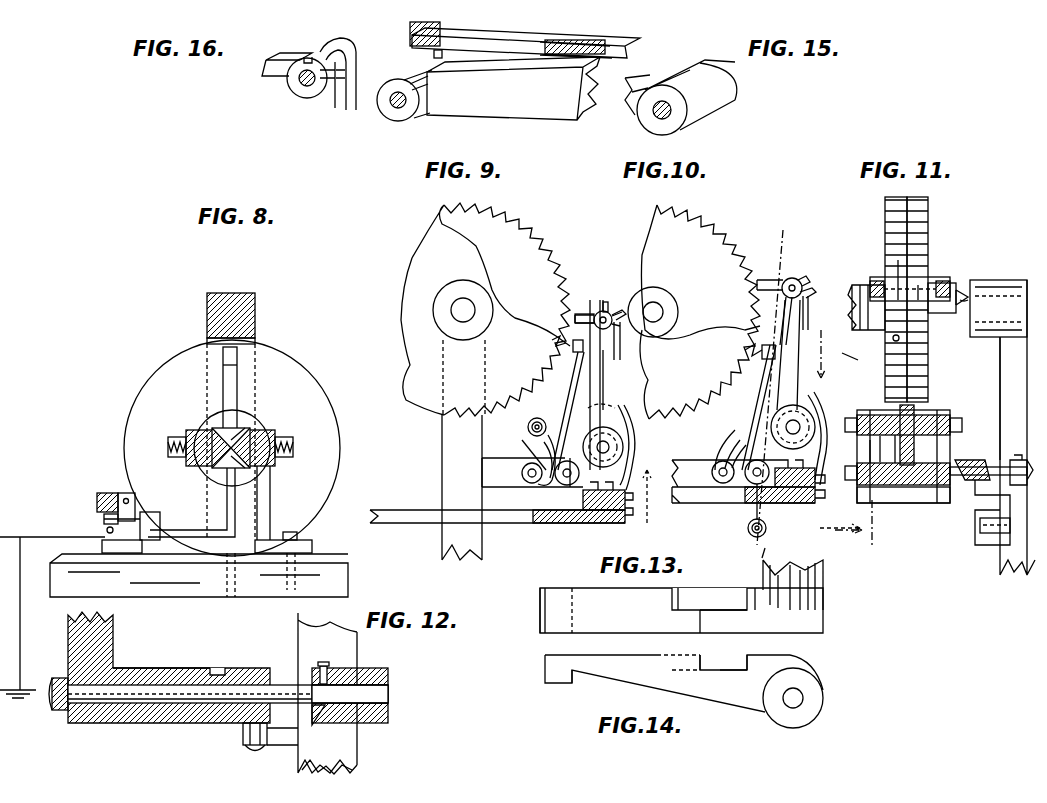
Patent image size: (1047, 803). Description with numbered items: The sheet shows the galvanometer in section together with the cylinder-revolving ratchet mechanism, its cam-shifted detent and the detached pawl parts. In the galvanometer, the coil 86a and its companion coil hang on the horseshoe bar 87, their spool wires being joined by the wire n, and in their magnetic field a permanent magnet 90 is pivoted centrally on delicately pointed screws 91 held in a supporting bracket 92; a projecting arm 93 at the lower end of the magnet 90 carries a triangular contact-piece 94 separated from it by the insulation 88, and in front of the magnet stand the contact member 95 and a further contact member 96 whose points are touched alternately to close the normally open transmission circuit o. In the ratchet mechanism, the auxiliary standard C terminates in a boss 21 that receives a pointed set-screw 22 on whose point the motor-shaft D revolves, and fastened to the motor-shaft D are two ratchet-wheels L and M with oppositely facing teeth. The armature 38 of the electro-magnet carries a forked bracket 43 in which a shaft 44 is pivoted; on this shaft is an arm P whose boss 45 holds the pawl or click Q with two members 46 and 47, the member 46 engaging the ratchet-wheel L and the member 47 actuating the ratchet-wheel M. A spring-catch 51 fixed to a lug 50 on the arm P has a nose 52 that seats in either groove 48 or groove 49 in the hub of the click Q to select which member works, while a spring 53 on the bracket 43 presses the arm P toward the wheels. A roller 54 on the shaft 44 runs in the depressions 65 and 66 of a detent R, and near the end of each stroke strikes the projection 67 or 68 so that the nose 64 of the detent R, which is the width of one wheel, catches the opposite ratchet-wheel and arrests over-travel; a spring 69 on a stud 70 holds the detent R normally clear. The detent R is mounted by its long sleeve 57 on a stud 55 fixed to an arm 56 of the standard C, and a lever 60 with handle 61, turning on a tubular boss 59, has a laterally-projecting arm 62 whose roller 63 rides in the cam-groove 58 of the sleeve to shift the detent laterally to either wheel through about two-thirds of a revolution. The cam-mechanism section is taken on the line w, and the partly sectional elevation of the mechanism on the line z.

In FIG. 11, the boss 21 is at (998, 370).
In FIG. 11, the pointed set-screw 22 is at (962, 312).
In FIG. 9, the armature 38 is at (412, 511).
In FIG. 10, the armature 38 is at (692, 505).
In FIG. 9, the forked bracket 43 is at (582, 523).
In FIG. 10, the forked bracket 43 is at (806, 458).
In FIG. 11, the forked bracket 43 is at (862, 458).
In FIG. 9, the shaft 44 is at (612, 447).
In FIG. 10, the shaft 44 is at (802, 427).
In FIG. 11, the shaft 44 is at (870, 424).
In FIG. 15, the boss 45 is at (392, 78).
In FIG. 16, the member 46 is at (264, 72).
In FIG. 9, the member 46 is at (608, 300).
In FIG. 10, the member 46 is at (786, 278).
In FIG. 11, the member 46 is at (910, 266).
In FIG. 16, the member 47 is at (343, 104).
In FIG. 9, the member 47 is at (574, 318).
In FIG. 10, the member 47 is at (786, 305).
In FIG. 11, the member 47 is at (922, 290).
In FIG. 16, the groove 48 is at (323, 54).
In FIG. 16, the groove 49 is at (334, 67).
In FIG. 10, the groove 49 is at (808, 275).
In FIG. 11, the groove 49 is at (880, 285).
In FIG. 15, the lug 50 is at (628, 60).
In FIG. 15, the spring-catch 51 is at (500, 42).
In FIG. 9, the spring-catch 51 is at (622, 338).
In FIG. 10, the spring-catch 51 is at (810, 304).
In FIG. 11, the spring-catch 51 is at (899, 326).
In FIG. 15, the nose 52 is at (432, 54).
In FIG. 9, the nose 52 is at (618, 310).
In FIG. 10, the nose 52 is at (812, 288).
In FIG. 9, the spring 53 is at (636, 454).
In FIG. 10, the spring 53 is at (822, 408).
In FIG. 11, the spring 53 is at (855, 429).
In FIG. 9, the roller 54 is at (598, 460).
In FIG. 10, the roller 54 is at (780, 398).
In FIG. 11, the roller 54 is at (900, 412).
In FIG. 12, the stud 55 is at (285, 680).
In FIG. 11, the stud 55 is at (992, 466).
In FIG. 12, the arm 56 is at (390, 672).
In FIG. 9, the arm 56 is at (532, 472).
In FIG. 10, the arm 56 is at (700, 466).
In FIG. 11, the arm 56 is at (1020, 458).
In FIG. 12, the long sleeve 57 is at (163, 666).
In FIG. 11, the long sleeve 57 is at (918, 485).
In FIG. 13, the long sleeve 57 is at (826, 576).
In FIG. 12, the cam-groove 58 is at (218, 666).
In FIG. 11, the cam-groove 58 is at (968, 480).
In FIG. 12, the tubular boss 59 is at (328, 676).
In FIG. 12, the lever 60 is at (352, 770).
In FIG. 9, the lever 60 is at (525, 449).
In FIG. 10, the lever 60 is at (760, 512).
In FIG. 11, the lever 60 is at (1000, 504).
In FIG. 9, the handle 61 is at (527, 424).
In FIG. 10, the handle 61 is at (766, 532).
In FIG. 11, the handle 61 is at (984, 534).
In FIG. 12, the laterally-projecting arm 62 is at (280, 738).
In FIG. 12, the roller 63 is at (242, 735).
In FIG. 9, the projecting nose 64 is at (571, 340).
In FIG. 10, the projecting nose 64 is at (765, 342).
In FIG. 13, the projecting nose 64 is at (540, 622).
In FIG. 14, the projecting nose 64 is at (560, 687).
In FIG. 13, the depression 65 is at (709, 599).
In FIG. 14, the depression 65 is at (729, 660).
In FIG. 10, the depression 66 is at (862, 466).
In FIG. 11, the depression 66 is at (888, 462).
In FIG. 13, the depression 66 is at (725, 620).
In FIG. 14, the depression 66 is at (778, 666).
In FIG. 10, the shoulder 67 is at (745, 432).
In FIG. 13, the shoulder 67 is at (748, 600).
In FIG. 14, the shoulder 67 is at (748, 656).
In FIG. 9, the projection 68 is at (600, 418).
In FIG. 13, the projection 68 is at (687, 621).
In FIG. 14, the projection 68 is at (699, 657).
In FIG. 9, the spring 69 is at (549, 462).
In FIG. 10, the spring 69 is at (742, 446).
In FIG. 9, the stud 70 is at (532, 483).
In FIG. 10, the stud 70 is at (723, 484).
In FIG. 8, the coil 86a is at (211, 436).
In FIG. 8, the horseshoe bar 87 is at (231, 292).
In FIG. 8, the insulation 88 is at (207, 564).
In FIG. 8, the permanent magnet 90 is at (240, 382).
In FIG. 8, the pointed screws 91 is at (166, 447).
In FIG. 8, the supporting bracket 92 is at (272, 494).
In FIG. 8, the projecting arm 93 is at (178, 532).
In FIG. 8, the triangular contact-piece 94 is at (142, 515).
In FIG. 8, the contact member 95 is at (96, 501).
In FIG. 8, the contact member 96 is at (102, 546).
In FIG. 12, the auxiliary standard C is at (348, 737).
In FIG. 9, the auxiliary standard C is at (462, 487).
In FIG. 11, the auxiliary standard C is at (1017, 428).
In FIG. 9, the motor-shaft D is at (463, 347).
In FIG. 10, the motor-shaft D is at (653, 312).
In FIG. 11, the motor-shaft D is at (950, 286).
In FIG. 9, the ratchet-wheel L is at (485, 310).
In FIG. 10, the ratchet-wheel L is at (700, 312).
In FIG. 11, the ratchet-wheel L is at (886, 215).
In FIG. 9, the ratchet-wheel M is at (507, 310).
In FIG. 10, the ratchet-wheel M is at (671, 374).
In FIG. 11, the ratchet-wheel M is at (922, 220).
In FIG. 15, the arm P is at (513, 88).
In FIG. 9, the arm P is at (612, 373).
In FIG. 10, the arm P is at (788, 355).
In FIG. 11, the arm P is at (882, 358).
In FIG. 16, the pawl Q is at (295, 82).
In FIG. 9, the pawl Q is at (598, 303).
In FIG. 10, the pawl Q is at (794, 277).
In FIG. 11, the pawl Q is at (910, 289).
In FIG. 12, the detent R is at (112, 640).
In FIG. 9, the detent R is at (576, 397).
In FIG. 10, the detent R is at (765, 406).
In FIG. 11, the detent R is at (896, 376).
In FIG. 13, the detent R is at (681, 610).
In FIG. 14, the detent R is at (667, 683).
In FIG. 8, the wire n is at (203, 352).
In FIG. 8, the transmission circuit o is at (52, 604).
In FIG. 12, the transmission circuit o is at (18, 655).
In FIG. 10, the section line w is at (769, 388).
In FIG. 13, the section line w is at (757, 548).
In FIG. 10, the section line z is at (826, 351).
In FIG. 11, the section line z is at (855, 532).